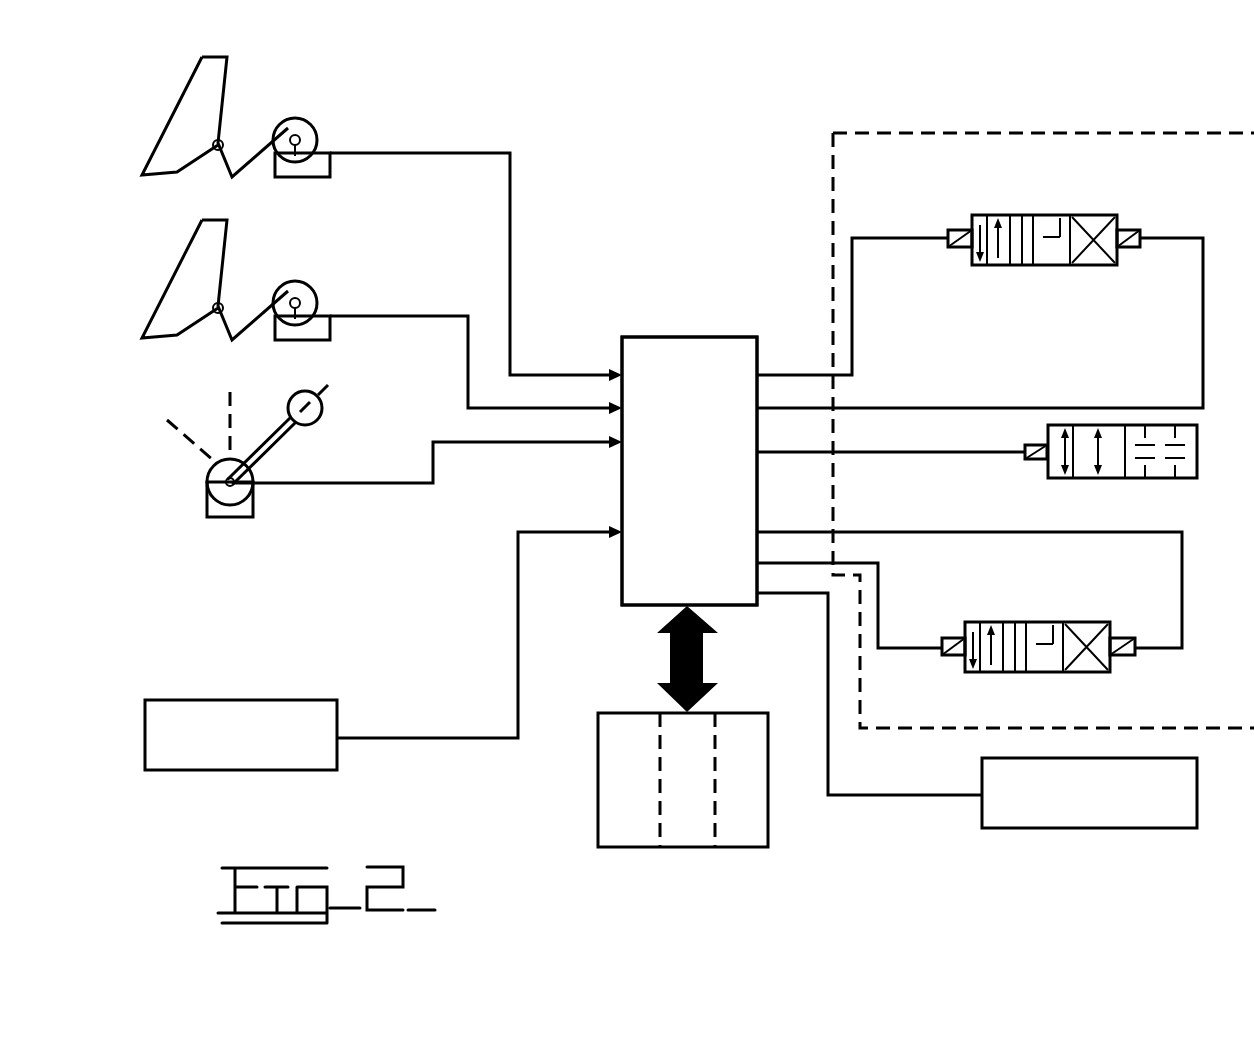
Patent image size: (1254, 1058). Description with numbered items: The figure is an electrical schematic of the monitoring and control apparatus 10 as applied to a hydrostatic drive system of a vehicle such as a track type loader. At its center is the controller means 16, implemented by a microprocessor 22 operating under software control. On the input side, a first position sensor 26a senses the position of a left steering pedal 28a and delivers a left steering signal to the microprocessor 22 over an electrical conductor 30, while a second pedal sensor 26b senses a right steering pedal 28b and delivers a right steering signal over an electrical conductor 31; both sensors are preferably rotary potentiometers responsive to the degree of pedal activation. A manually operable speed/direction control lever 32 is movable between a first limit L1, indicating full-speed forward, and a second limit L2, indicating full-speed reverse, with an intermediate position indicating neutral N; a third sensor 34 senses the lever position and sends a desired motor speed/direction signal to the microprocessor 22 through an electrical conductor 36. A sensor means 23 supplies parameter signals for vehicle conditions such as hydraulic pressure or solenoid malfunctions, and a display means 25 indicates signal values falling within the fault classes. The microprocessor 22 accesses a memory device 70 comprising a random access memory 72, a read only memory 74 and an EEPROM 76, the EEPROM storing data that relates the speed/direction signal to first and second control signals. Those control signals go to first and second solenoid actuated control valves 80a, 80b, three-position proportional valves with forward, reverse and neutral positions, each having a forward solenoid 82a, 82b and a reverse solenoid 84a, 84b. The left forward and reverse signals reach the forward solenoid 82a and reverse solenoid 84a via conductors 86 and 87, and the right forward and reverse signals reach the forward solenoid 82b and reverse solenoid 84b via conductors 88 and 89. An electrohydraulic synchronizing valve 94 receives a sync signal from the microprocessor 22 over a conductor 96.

The monitoring and control apparatus 10 is at (731, 156).
The controller means 16 is at (732, 314).
The microprocessor 22 is at (625, 337).
The sensor means 23 is at (258, 700).
The display means 25 is at (1090, 828).
The first position sensor 26a is at (322, 140).
The second pedal sensor 26b is at (320, 303).
The left steering pedal 28a is at (228, 88).
The right steering pedal 28b is at (228, 250).
The electrical conductor 30 is at (433, 150).
The electrical conductor 31 is at (396, 316).
The control lever 32 is at (287, 432).
The third sensor 34 is at (253, 508).
The electrical conductor 36 is at (353, 485).
The memory device 70 is at (733, 692).
The random access memory (RAM) 72 is at (637, 847).
The read only memory (ROM) 74 is at (698, 847).
The electronically erasable programmable read only memory (EEPROM) 76 is at (728, 847).
The first solenoid actuated control valve 80a is at (1027, 215).
The second solenoid actuated control valve 80b is at (1038, 622).
The first forward solenoid 82a is at (967, 233).
The second forward solenoid 82b is at (955, 655).
The first reverse solenoid 84a is at (1125, 232).
The second reverse solenoid 84b is at (1122, 663).
The conductor 86 is at (855, 350).
The conductor 87 is at (970, 408).
The conductor 88 is at (845, 532).
The conductor 89 is at (880, 603).
The electrohydraulic synchronizing valve 94 is at (1133, 480).
The conductor 96 is at (947, 453).
The first limit L1 is at (349, 384).
The second limit L2 is at (167, 422).
The neutral N is at (228, 411).